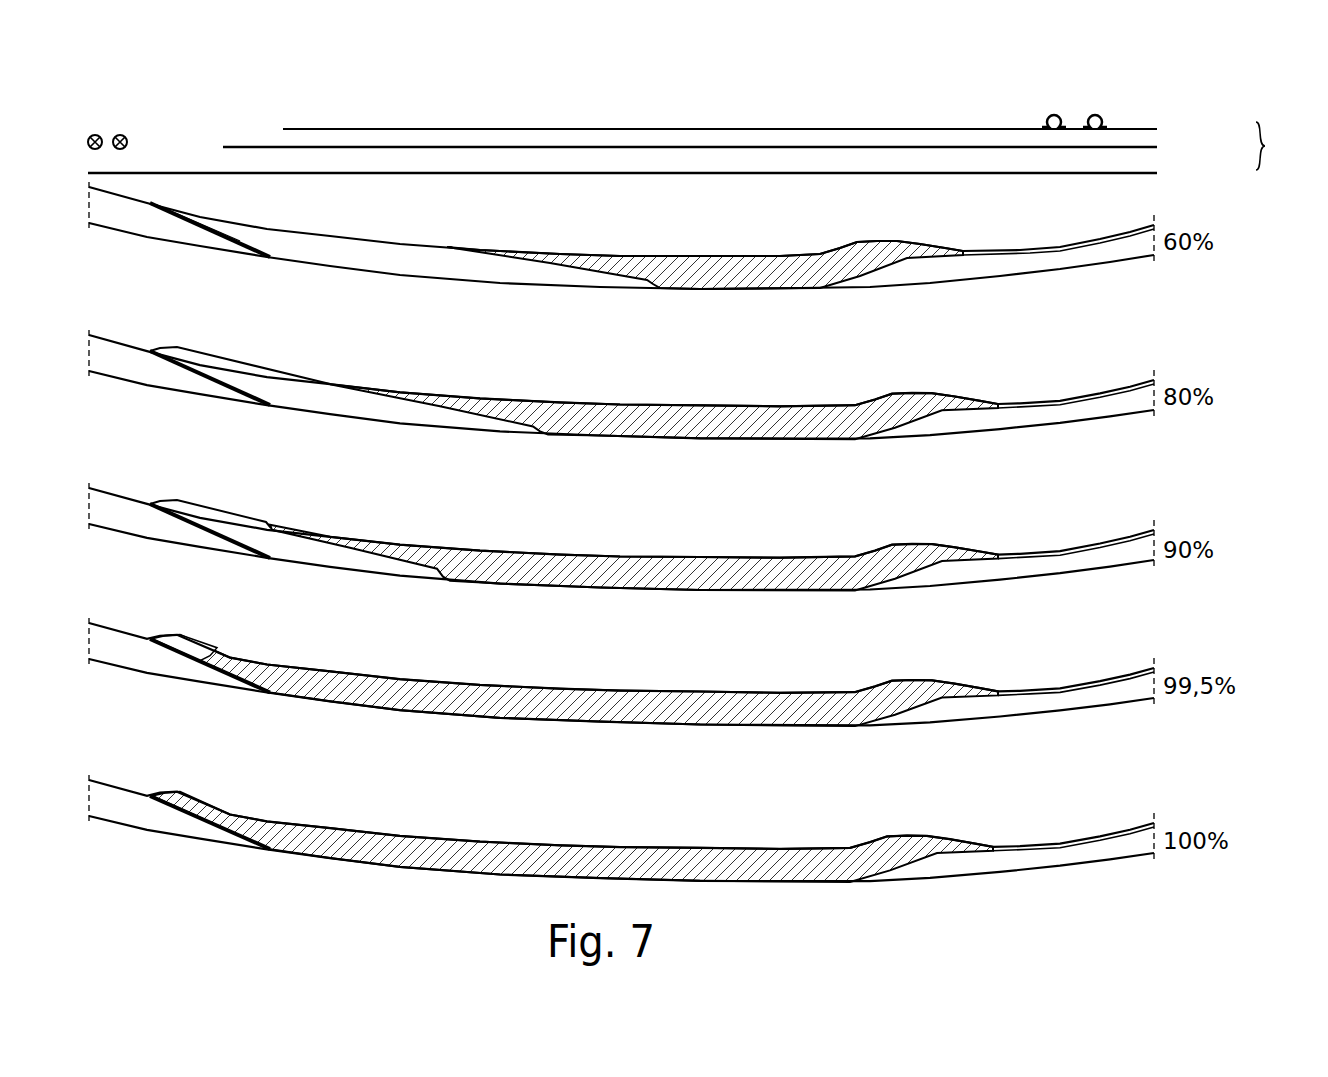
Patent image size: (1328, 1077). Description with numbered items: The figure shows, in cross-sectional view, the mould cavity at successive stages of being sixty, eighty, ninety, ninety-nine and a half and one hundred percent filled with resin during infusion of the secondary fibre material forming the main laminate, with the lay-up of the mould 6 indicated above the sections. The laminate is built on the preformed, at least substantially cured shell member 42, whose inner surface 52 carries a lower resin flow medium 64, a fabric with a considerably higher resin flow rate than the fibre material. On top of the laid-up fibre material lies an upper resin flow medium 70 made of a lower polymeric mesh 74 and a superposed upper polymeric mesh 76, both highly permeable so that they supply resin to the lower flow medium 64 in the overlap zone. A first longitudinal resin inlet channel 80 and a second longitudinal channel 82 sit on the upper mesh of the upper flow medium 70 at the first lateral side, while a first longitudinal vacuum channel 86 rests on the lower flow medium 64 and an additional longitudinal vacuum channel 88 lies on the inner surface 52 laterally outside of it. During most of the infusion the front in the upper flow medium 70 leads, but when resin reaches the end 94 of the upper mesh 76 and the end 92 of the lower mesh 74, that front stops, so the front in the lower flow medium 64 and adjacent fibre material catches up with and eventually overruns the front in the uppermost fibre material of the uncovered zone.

The mould 6 is at (1157, 173).
The shell member 42 is at (120, 218).
The inner surface 52 is at (238, 241).
The lower resin flow medium 64 is at (1067, 243).
The upper resin flow medium 70 is at (1276, 146).
The lower polymeric mesh 74 is at (1157, 148).
The upper polymeric mesh 76 is at (1157, 130).
The first longitudinal resin inlet channel 80 is at (1046, 115).
The second longitudinal channel 82 is at (1102, 115).
The first longitudinal vacuum channel 86 is at (118, 134).
The additional longitudinal vacuum channel 88 is at (92, 134).
The end of the lower mesh 92 is at (223, 147).
The end of the upper mesh 94 is at (283, 129).